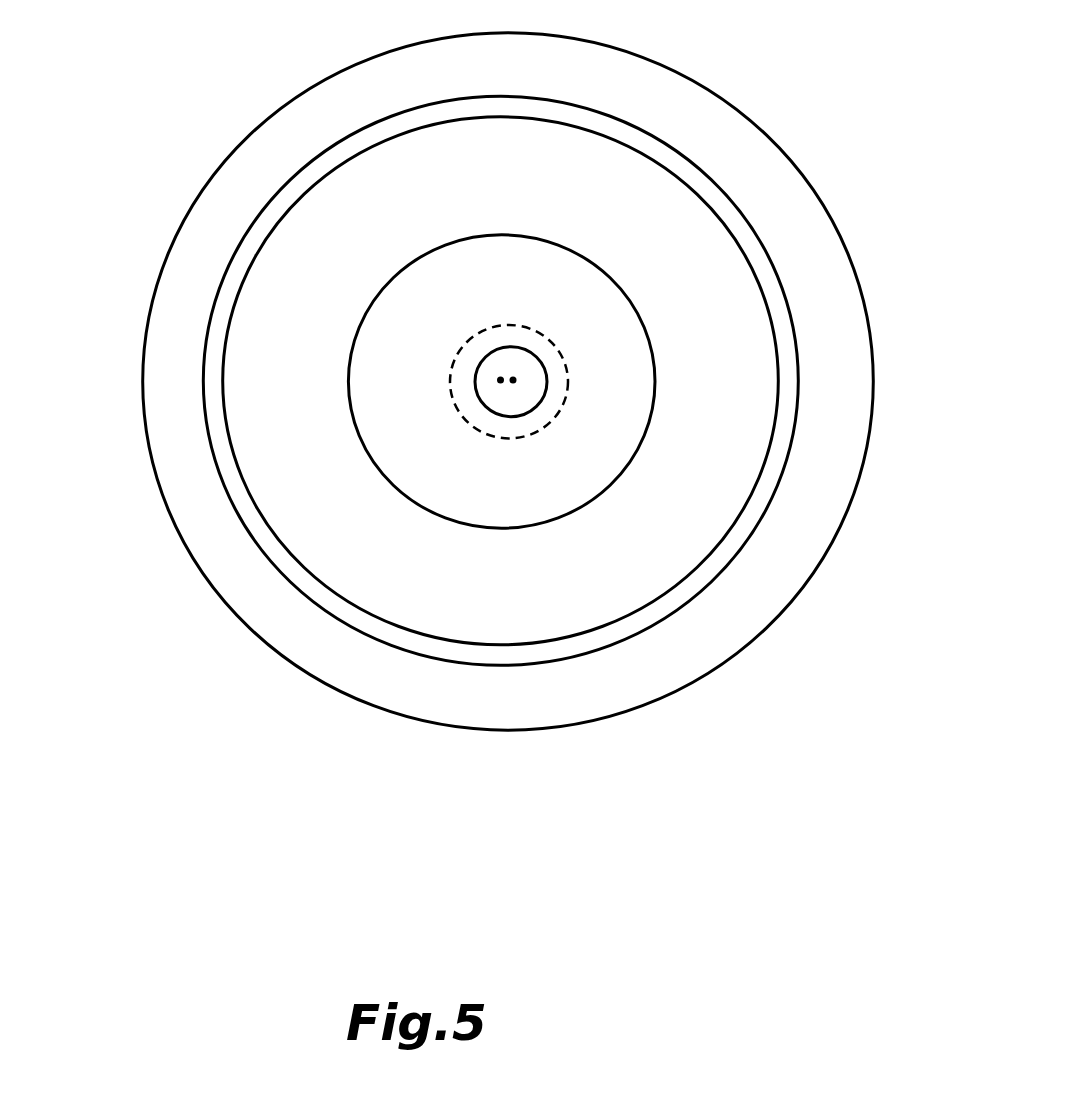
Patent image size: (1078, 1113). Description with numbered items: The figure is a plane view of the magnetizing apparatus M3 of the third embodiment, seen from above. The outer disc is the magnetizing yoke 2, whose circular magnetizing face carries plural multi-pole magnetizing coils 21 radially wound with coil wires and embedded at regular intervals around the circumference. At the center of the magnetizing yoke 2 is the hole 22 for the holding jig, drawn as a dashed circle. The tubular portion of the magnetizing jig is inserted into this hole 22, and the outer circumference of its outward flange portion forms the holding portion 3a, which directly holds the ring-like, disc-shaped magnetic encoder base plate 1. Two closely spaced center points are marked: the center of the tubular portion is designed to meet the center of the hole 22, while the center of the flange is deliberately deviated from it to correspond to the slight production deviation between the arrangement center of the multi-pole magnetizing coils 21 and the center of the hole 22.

The magnetizing apparatus M3 is at (850, 241).
The magnetizing yoke 2 is at (823, 505).
The multi-pole magnetizing coil 21 is at (700, 583).
The magnetic encoder base plate 1 is at (717, 505).
The holding portion 3a is at (347, 345).
The hole for holding jig 22 is at (462, 413).